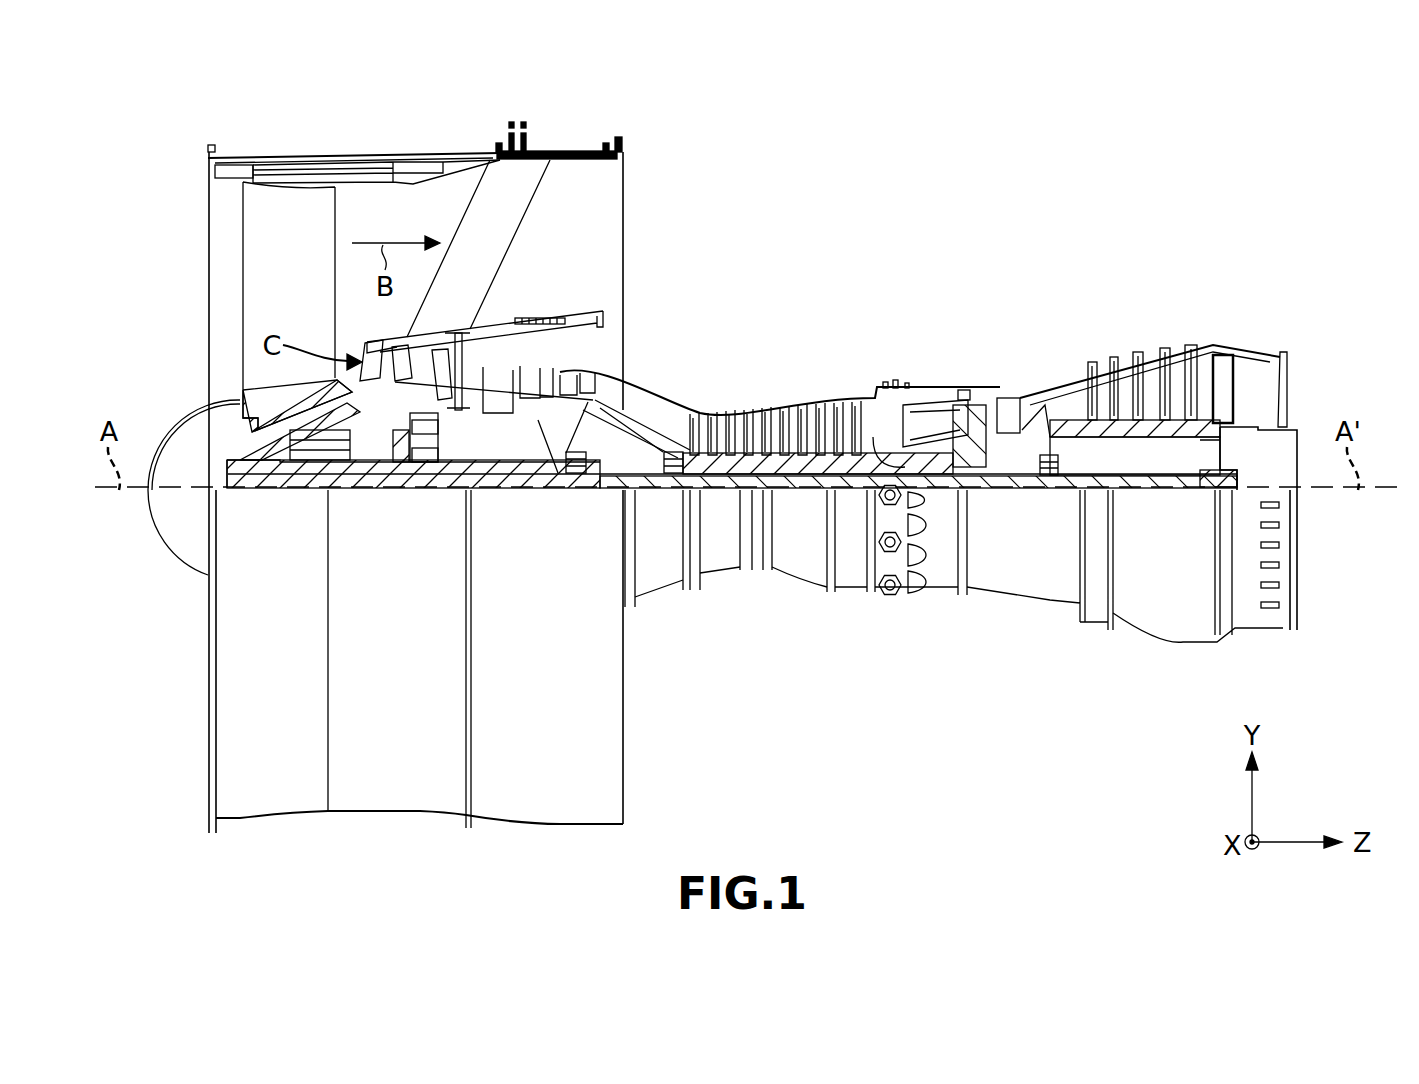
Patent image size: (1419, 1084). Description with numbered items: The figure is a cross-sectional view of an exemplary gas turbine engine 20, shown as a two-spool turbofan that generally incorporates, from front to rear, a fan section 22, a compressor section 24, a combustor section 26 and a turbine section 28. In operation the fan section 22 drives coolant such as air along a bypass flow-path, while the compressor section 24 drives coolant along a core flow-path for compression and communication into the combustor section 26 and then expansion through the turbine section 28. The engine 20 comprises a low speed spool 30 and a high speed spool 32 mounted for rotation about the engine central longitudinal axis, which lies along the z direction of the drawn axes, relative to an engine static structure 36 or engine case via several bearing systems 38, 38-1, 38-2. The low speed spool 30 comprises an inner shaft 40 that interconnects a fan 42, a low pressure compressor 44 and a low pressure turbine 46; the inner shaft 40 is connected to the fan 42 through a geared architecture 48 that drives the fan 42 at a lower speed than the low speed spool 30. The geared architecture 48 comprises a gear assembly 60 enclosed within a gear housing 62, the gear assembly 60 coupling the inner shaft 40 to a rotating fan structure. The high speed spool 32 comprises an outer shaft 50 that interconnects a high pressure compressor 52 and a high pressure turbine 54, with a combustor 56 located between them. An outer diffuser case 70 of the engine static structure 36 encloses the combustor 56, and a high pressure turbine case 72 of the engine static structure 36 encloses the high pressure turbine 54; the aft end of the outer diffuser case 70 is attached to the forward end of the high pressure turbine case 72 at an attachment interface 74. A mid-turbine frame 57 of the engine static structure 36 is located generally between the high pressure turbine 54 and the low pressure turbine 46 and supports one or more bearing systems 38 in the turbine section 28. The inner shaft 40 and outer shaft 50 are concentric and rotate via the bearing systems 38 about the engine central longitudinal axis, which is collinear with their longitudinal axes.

The gas turbine engine 20 is at (985, 198).
The fan section 22 is at (465, 132).
The compressor section 24 is at (473, 272).
The combustor section 26 is at (877, 272).
The turbine section 28 is at (1222, 272).
The low speed spool 30 is at (806, 514).
The high speed spool 32 is at (848, 450).
The engine static structure 36 is at (852, 570).
The bearing system 38 is at (1050, 475).
The bearing system 38-1 is at (302, 462).
The bearing system 38-2 is at (572, 474).
The inner shaft 40 is at (647, 490).
The fan 42 is at (273, 293).
The low pressure compressor 44 is at (549, 380).
The low pressure turbine 46 is at (1153, 365).
The geared architecture 48 is at (427, 512).
The outer shaft 50 is at (940, 480).
The high pressure compressor 52 is at (783, 455).
The high pressure turbine 54 is at (1010, 398).
The combustor 56 is at (930, 425).
The mid-turbine frame 57 is at (1050, 435).
The gear assembly 60 is at (449, 456).
The gear housing 62 is at (449, 428).
The outer diffuser case 70 is at (935, 580).
The high pressure turbine case 72 is at (1045, 583).
The attachment interface 74 is at (965, 392).